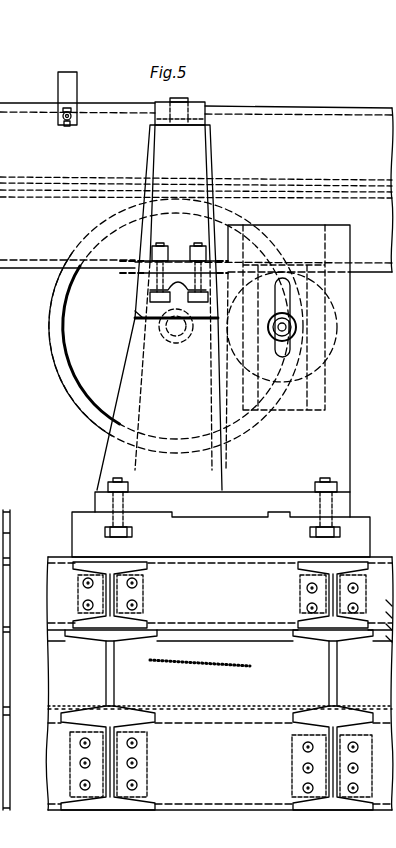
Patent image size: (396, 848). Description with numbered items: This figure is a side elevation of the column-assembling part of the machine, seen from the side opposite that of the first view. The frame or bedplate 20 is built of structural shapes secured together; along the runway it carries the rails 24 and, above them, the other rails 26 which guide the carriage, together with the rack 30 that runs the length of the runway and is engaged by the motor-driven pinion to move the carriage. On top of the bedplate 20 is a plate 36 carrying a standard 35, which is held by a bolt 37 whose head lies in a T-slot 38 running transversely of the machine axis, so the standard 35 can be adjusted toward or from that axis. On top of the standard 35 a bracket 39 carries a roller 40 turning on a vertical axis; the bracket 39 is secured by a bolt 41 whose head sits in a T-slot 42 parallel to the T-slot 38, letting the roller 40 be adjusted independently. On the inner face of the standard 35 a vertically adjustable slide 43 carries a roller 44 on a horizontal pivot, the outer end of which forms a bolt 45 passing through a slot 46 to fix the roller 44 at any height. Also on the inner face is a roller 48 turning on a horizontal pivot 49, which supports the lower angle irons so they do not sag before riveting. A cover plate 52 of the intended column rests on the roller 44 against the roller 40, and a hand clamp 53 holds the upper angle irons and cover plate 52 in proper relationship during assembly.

The frame or bedplate 20 is at (219, 683).
The rails 24 is at (239, 712).
The other rails 26 is at (182, 637).
The rack 30 is at (200, 711).
The standard 35 is at (348, 446).
The plate 36 is at (221, 524).
The bolt 37 is at (115, 480).
The T-slot 38 is at (133, 532).
The bracket 39 is at (195, 169).
The roller 40 is at (210, 148).
The bolt 41 is at (198, 246).
The T-slot 42 is at (143, 313).
The vertically adjustable slide 43 is at (315, 362).
The roller 44 is at (338, 329).
The bolt 45 is at (284, 352).
The slot 46 is at (289, 300).
The roller 48 is at (61, 378).
The horizontal pivot 49 is at (176, 345).
The cover plate 52 is at (196, 187).
The hand clamp 53 is at (69, 93).